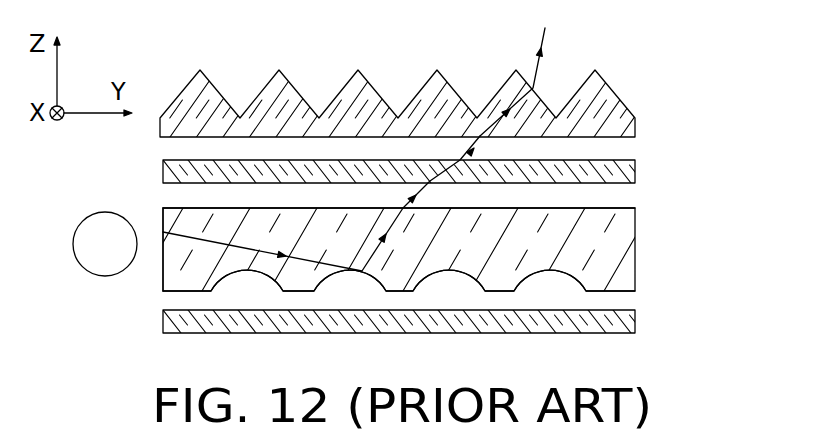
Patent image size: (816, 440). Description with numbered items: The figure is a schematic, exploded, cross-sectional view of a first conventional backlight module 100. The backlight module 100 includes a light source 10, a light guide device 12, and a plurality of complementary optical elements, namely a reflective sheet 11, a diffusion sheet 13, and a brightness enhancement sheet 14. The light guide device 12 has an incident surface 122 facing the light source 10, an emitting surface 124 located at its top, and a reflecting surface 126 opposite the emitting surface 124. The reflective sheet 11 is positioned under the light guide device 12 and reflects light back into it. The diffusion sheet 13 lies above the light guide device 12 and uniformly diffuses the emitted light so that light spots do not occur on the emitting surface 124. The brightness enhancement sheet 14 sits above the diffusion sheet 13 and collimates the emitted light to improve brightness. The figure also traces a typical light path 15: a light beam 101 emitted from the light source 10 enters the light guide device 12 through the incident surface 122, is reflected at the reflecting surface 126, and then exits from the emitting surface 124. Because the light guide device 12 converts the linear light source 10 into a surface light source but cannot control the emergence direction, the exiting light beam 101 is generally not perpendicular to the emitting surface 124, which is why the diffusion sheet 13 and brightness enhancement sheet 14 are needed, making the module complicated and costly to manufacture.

The backlight module 100 is at (386, 33).
The light source 10 is at (93, 243).
The light beam 101 is at (162, 231).
The reflective sheet 11 is at (625, 323).
The light guide device 12 is at (611, 249).
The incident surface 122 is at (161, 274).
The emitting surface 124 is at (611, 206).
The reflecting surface 126 is at (621, 291).
The diffusion sheet 13 is at (620, 165).
The brightness enhancement sheet 14 is at (605, 107).
The light path 15 is at (540, 60).